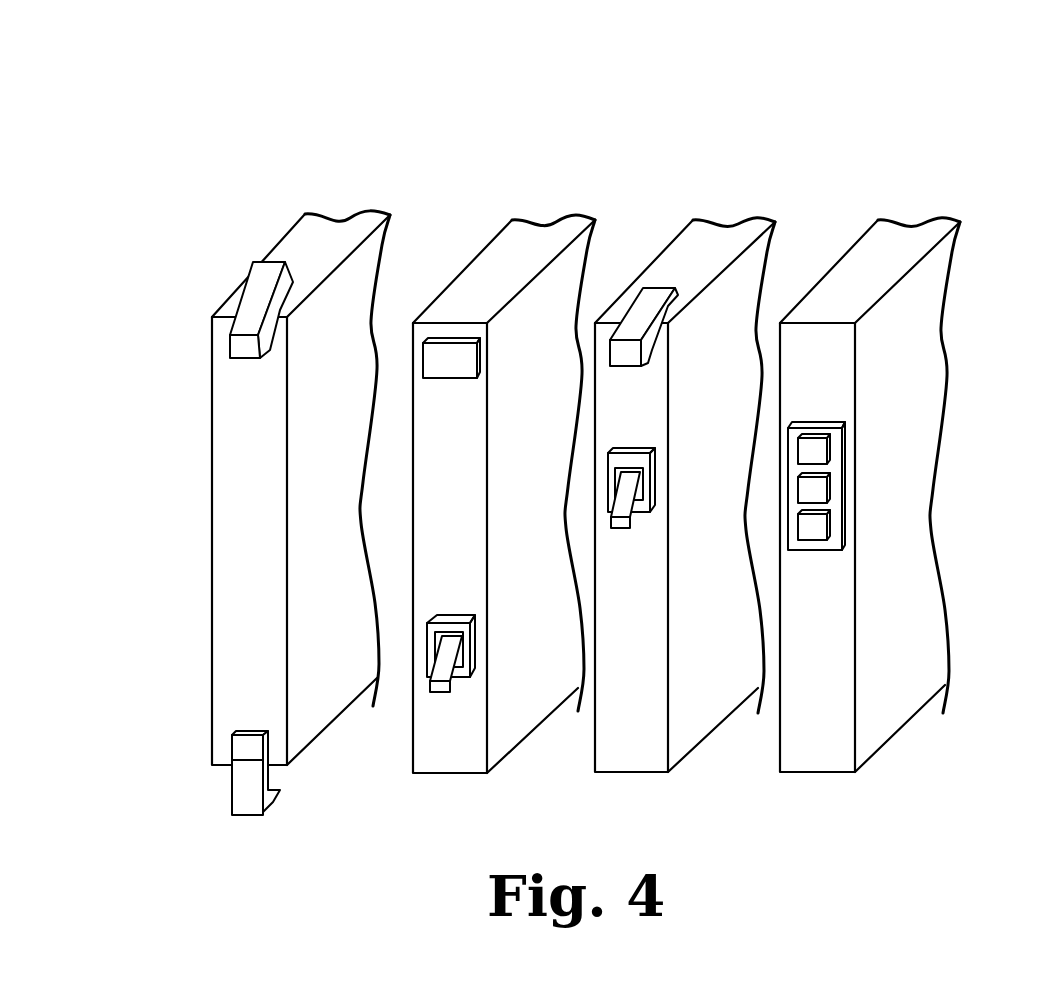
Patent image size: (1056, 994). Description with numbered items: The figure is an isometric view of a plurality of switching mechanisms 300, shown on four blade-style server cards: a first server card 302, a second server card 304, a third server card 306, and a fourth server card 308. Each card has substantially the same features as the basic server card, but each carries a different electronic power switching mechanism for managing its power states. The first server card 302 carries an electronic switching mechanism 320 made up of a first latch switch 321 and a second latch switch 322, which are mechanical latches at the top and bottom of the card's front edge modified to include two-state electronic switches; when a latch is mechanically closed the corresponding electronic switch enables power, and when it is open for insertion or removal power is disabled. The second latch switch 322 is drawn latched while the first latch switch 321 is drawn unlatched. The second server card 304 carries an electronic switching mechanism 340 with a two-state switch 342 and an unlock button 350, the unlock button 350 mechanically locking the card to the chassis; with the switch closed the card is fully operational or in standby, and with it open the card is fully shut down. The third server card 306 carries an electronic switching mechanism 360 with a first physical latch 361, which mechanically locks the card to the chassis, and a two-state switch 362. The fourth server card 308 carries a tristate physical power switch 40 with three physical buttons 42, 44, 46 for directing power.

The plurality of switching mechanisms 300 is at (600, 108).
The first server card 302 is at (333, 232).
The second server card 304 is at (535, 232).
The third server card 306 is at (720, 235).
The fourth server card 308 is at (905, 235).
The electronic switching mechanism 320 is at (246, 274).
The first latch switch 321 is at (228, 787).
The second latch switch 322 is at (228, 347).
The electronic switching mechanism 340 is at (448, 328).
The two-state switch 342 is at (468, 650).
The unlock button 350 is at (477, 360).
The electronic switching mechanism 360 is at (632, 305).
The first physical latch 361 is at (652, 353).
The two-state switch 362 is at (648, 483).
The physical power switch 40 is at (845, 480).
The physical button 42 is at (830, 450).
The physical button 44 is at (830, 488).
The physical button 46 is at (830, 528).